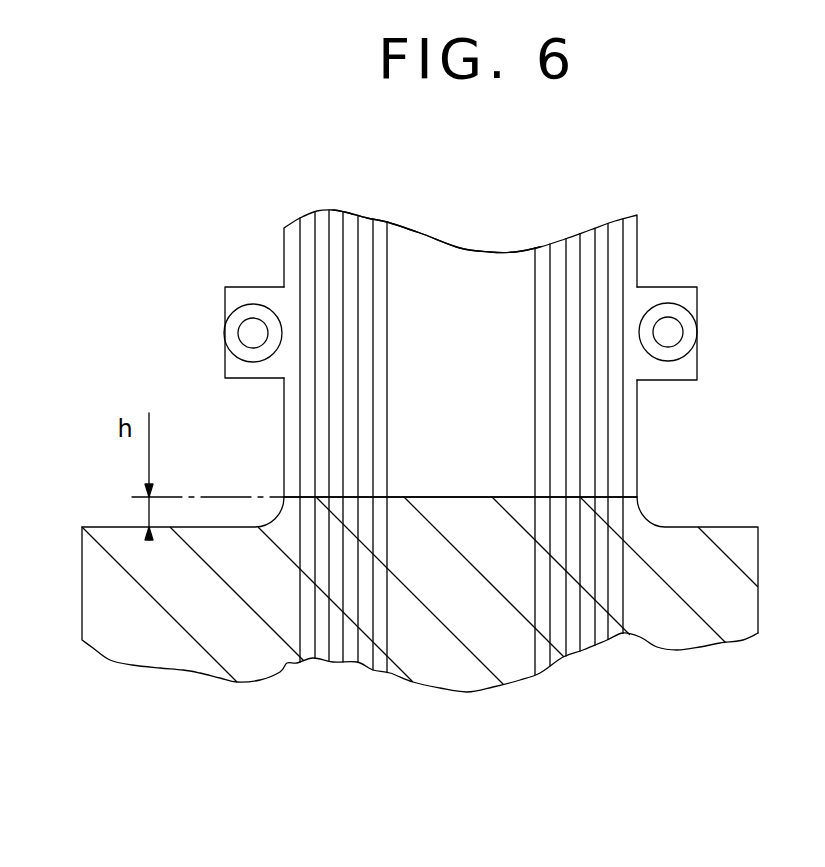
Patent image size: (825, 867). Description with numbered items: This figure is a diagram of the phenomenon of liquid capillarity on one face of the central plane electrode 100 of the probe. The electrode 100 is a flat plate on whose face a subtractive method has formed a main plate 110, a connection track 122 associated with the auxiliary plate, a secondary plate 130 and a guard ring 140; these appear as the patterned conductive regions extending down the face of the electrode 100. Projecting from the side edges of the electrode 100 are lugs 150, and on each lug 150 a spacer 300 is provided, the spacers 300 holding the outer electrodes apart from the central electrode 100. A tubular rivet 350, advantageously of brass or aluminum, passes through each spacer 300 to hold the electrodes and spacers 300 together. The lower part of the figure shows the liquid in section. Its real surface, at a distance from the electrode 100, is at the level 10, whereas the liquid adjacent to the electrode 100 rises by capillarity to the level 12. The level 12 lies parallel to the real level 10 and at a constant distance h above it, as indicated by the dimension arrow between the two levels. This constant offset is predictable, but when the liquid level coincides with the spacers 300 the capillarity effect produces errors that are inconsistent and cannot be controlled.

The level of the liquid surface 10 is at (107, 527).
The level of the liquid adjacent to the electrode 12 is at (405, 496).
The central plane electrode 100 is at (585, 214).
The main plate 110 is at (470, 284).
The connection track 122 is at (333, 229).
The secondary plate 130 is at (588, 243).
The guard ring 140 is at (363, 232).
The lugs 150 is at (265, 292).
The spacers 300 is at (238, 348).
The tubular rivets 350 is at (253, 333).